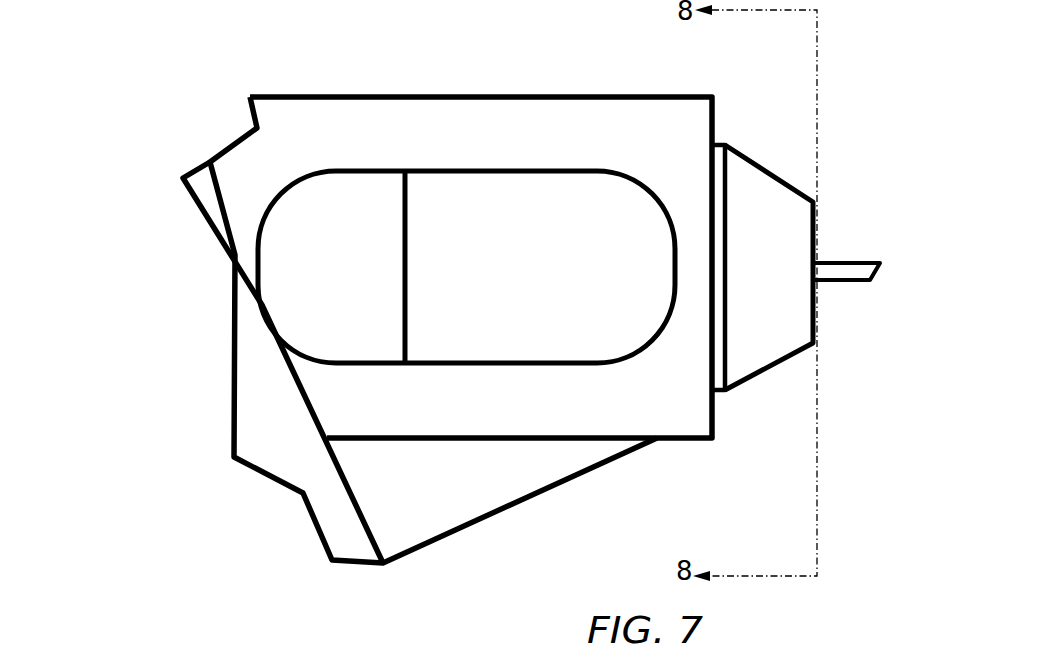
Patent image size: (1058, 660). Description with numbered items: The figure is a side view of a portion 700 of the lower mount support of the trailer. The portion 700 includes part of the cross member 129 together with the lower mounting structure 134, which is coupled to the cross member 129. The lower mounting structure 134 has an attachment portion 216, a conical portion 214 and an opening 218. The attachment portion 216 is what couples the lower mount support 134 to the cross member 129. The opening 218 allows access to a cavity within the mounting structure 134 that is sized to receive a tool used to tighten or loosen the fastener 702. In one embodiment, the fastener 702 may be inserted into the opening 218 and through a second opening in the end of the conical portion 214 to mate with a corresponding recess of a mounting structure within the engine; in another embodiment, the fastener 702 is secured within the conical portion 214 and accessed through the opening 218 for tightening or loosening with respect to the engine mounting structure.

The portion of lower mount support 700 is at (145, 32).
The lower mounting structure 134 is at (403, 22).
The attachment portion 216 is at (585, 97).
The opening 218 is at (529, 274).
The cross member 129 is at (195, 172).
The conical portion 214 is at (770, 202).
The fastener 702 is at (842, 282).